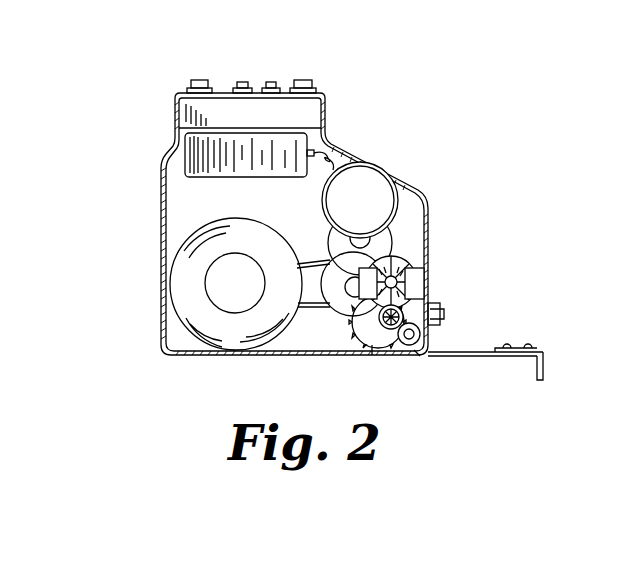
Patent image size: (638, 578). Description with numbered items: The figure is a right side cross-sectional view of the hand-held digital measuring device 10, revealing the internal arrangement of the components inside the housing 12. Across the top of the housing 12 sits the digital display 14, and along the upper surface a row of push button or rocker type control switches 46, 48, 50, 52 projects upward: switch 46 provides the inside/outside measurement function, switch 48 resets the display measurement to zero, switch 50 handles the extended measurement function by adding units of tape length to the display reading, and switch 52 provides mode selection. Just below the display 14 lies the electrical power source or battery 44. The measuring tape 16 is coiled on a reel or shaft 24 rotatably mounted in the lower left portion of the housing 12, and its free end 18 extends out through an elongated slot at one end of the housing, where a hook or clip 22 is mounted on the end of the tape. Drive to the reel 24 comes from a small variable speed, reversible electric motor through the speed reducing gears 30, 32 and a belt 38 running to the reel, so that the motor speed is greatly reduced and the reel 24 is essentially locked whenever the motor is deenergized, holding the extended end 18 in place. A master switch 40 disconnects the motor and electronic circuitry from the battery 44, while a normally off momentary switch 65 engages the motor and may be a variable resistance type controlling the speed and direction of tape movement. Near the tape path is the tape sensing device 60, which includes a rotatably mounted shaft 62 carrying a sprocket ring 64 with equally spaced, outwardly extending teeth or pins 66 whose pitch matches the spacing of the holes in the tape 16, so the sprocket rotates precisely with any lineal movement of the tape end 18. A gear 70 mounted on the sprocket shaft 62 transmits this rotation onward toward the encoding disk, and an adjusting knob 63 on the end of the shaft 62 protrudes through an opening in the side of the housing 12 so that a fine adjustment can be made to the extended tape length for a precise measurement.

The hand-held digital measuring device 10 is at (157, 200).
The housing 12 is at (367, 158).
The digital display 14 is at (307, 118).
The measuring tape 16 is at (340, 355).
The free end 18 is at (485, 352).
The hook or clip 22 is at (545, 352).
The reel or shaft 24 is at (230, 320).
The speed reducing gear 30 is at (378, 240).
The speed reducing gear 32 is at (320, 318).
The belt 38 is at (300, 320).
The master switch 40 is at (430, 305).
The battery 44 is at (205, 152).
The control switch 46 is at (305, 80).
The control switch 48 is at (270, 81).
The control switch 50 is at (243, 81).
The control switch 52 is at (197, 79).
The tape sensing device 60 is at (408, 250).
The sprocket shaft 62 is at (394, 333).
The adjusting knob 63 is at (380, 342).
The sprocket ring 64 is at (387, 340).
The momentary switch 65 is at (418, 352).
The teeth or pins 66 is at (373, 355).
The gear 70 is at (432, 322).